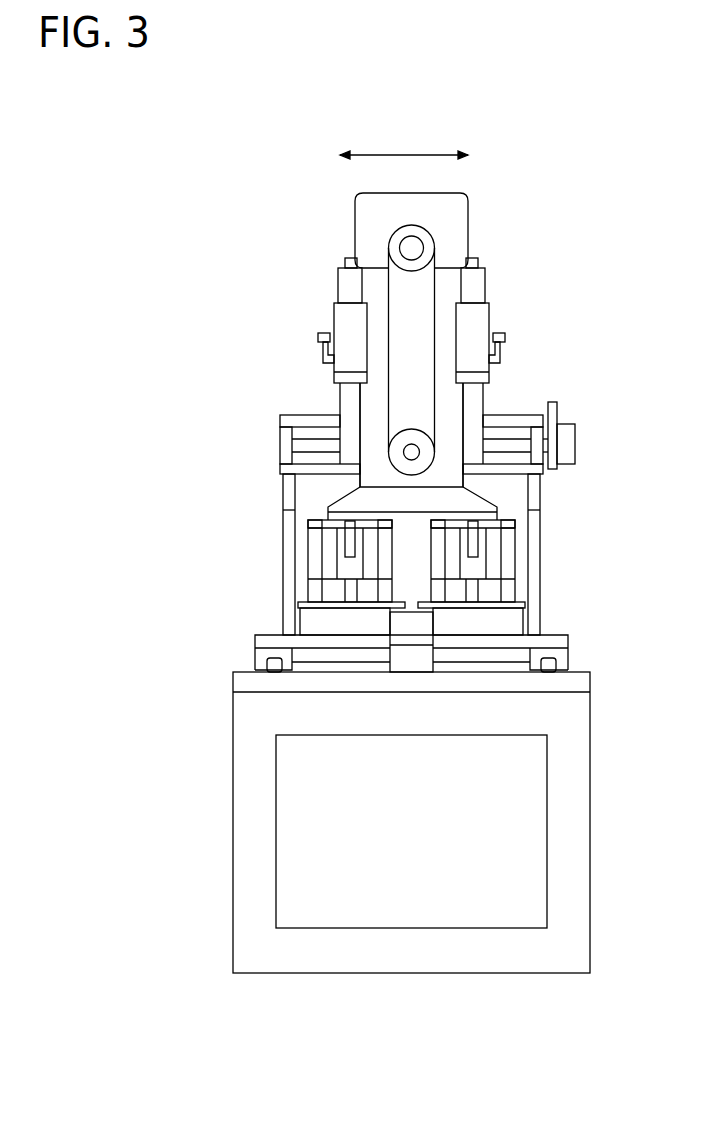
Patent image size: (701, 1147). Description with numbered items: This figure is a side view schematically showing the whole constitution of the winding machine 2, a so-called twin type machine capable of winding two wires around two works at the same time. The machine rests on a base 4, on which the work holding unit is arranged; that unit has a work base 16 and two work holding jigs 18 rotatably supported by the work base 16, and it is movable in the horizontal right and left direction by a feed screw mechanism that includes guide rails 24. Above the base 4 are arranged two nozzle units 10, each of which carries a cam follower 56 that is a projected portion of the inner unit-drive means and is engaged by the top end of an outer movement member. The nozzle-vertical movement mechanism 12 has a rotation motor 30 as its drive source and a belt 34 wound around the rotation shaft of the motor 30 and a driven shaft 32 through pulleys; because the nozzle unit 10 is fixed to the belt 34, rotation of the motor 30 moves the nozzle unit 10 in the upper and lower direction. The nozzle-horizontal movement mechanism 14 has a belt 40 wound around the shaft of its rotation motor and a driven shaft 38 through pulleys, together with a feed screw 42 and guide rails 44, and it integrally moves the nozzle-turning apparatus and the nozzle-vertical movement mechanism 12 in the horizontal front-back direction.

The winding machine 2 is at (203, 320).
The base 4 is at (592, 812).
The nozzle unit 10 is at (334, 310).
The nozzle-vertical movement mechanism 12 is at (472, 203).
The nozzle-horizontal movement mechanism 14 is at (568, 391).
The work base 16 is at (562, 640).
The work holding jig 18 is at (313, 549).
The guide rail 24 is at (267, 661).
The rotation motor 30 is at (458, 218).
The driven shaft 32 is at (413, 457).
The belt 34 is at (437, 285).
The driven shaft 38 is at (575, 440).
The belt 40 is at (557, 409).
The feed screw 42 is at (507, 442).
The guide rail 44 is at (308, 415).
The cam follower 56 is at (318, 337).